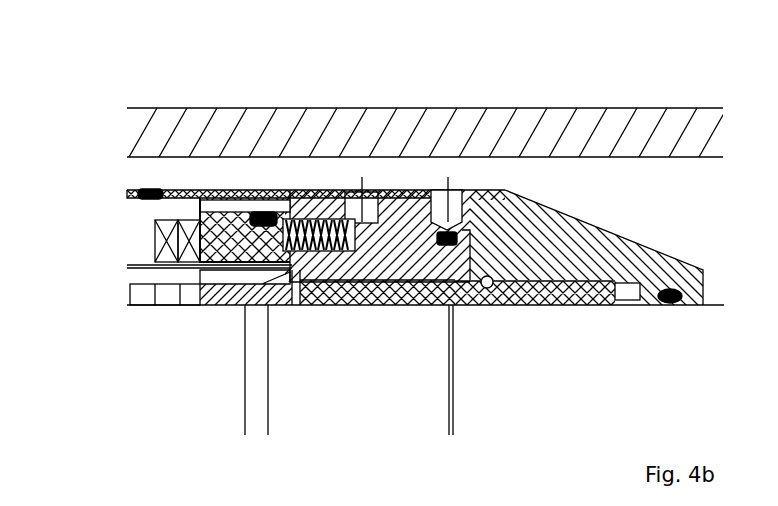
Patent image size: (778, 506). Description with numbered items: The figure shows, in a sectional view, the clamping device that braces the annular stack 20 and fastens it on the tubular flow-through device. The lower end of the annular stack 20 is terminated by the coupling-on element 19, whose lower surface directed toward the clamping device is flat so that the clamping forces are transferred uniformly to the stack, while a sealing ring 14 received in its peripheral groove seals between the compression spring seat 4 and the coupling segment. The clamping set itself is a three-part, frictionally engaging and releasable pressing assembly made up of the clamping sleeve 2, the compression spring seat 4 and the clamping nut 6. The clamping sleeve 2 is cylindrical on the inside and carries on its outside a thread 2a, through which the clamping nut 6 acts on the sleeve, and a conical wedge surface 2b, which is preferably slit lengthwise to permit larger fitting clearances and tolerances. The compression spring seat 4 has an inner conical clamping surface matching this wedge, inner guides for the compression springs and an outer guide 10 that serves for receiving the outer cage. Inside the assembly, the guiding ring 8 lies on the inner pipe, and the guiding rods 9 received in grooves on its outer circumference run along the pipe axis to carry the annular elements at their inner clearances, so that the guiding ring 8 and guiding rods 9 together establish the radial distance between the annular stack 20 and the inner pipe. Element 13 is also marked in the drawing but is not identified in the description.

The clamping sleeve 2 is at (380, 260).
The thread 2a is at (548, 300).
The conical wedge surface 2b is at (390, 197).
The compression spring seat 4 is at (465, 305).
The clamping nut 6 is at (548, 305).
The guiding ring 8 is at (193, 303).
The guiding rod 9 is at (127, 284).
The outer guide 10 is at (198, 213).
The support 13 is at (325, 305).
The sealing ring 14 is at (228, 302).
The coupling-on element 19 is at (140, 194).
The annular stack 20 is at (155, 236).